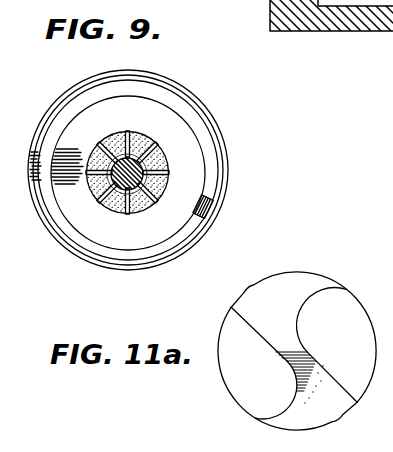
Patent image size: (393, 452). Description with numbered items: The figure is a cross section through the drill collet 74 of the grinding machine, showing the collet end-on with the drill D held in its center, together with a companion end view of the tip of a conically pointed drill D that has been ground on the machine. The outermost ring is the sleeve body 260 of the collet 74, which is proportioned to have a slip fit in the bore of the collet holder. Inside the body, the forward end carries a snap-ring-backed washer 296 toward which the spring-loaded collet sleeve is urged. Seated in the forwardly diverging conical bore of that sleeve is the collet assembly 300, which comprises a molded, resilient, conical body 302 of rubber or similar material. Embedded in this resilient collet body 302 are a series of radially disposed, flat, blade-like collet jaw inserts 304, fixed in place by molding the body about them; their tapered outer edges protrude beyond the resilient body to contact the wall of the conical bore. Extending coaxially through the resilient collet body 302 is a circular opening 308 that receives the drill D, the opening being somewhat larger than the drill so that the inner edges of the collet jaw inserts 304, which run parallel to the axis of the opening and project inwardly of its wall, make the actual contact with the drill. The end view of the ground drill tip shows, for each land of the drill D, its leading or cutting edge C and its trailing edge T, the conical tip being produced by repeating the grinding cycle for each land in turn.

In FIG. 9, the collet 74 is at (215, 117).
In FIG. 9, the sleeve body 260 is at (228, 189).
In FIG. 9, the snap-ring-backed washer 296 is at (194, 160).
In FIG. 9, the resilient collet body 302 is at (205, 186).
In FIG. 9, the collet jaw inserts 304 is at (122, 141).
In FIG. 9, the collet assembly 300 is at (137, 199).
In FIG. 9, the circular opening 308 is at (111, 210).
In FIG. 9, the drill D is at (163, 156).
In FIG. 11a, the drill D is at (300, 270).
In FIG. 11a, the trailing edge T is at (307, 300).
In FIG. 11a, the cutting edge C is at (262, 340).